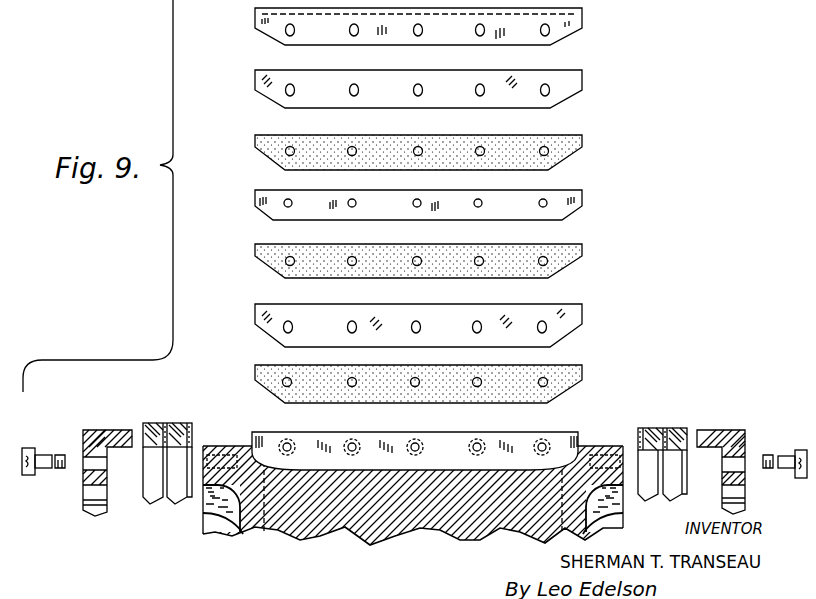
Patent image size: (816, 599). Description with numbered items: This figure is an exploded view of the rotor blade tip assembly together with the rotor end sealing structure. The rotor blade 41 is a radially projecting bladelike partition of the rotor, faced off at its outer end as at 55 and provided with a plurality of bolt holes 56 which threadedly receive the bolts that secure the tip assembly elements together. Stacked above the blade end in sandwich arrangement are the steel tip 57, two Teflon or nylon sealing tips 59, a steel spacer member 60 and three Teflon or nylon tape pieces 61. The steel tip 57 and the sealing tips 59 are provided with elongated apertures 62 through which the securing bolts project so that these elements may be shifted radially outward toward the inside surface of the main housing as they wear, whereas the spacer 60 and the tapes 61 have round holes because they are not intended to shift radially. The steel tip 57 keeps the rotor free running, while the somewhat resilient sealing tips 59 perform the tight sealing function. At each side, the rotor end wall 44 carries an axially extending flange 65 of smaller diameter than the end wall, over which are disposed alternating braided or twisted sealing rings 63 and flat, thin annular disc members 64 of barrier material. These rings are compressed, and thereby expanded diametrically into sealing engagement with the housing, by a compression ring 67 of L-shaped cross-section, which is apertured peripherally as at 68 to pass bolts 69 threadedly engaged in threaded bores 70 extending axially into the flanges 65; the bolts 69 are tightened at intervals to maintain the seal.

The rotor blade 41 is at (379, 520).
The rotor end wall 44 is at (257, 525).
The faced-off outer end 55 is at (274, 440).
The bolt holes 56 is at (415, 439).
The steel tip 57 is at (270, 31).
The sealing tip 59 is at (267, 87).
The steel spacer member 60 is at (259, 207).
The tape piece 61 is at (263, 152).
The elongated aperture 62 is at (418, 87).
The sealing ring 63 is at (177, 496).
The annular disc member 64 is at (181, 423).
The flange 65 is at (214, 497).
The compression ring 67 is at (95, 430).
The aperture 68 is at (85, 462).
The bolt 69 is at (32, 450).
The threaded bore 70 is at (218, 452).